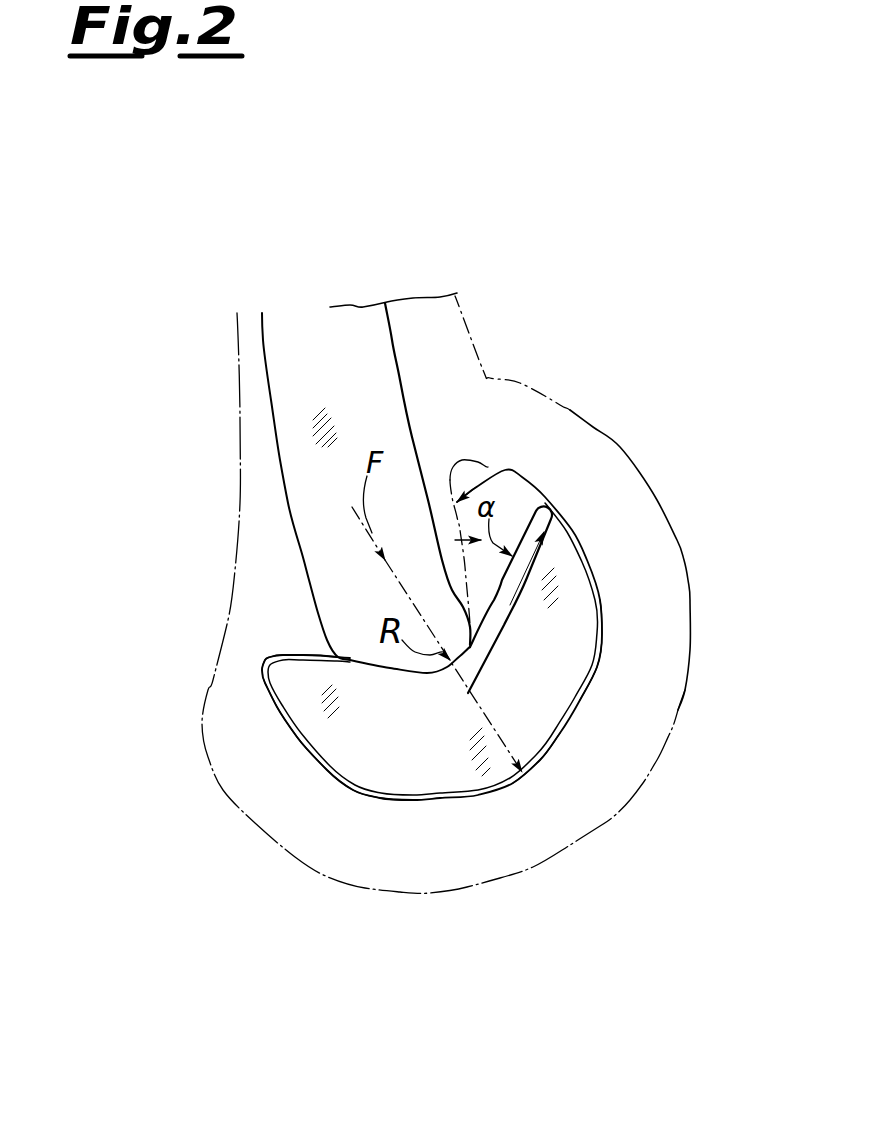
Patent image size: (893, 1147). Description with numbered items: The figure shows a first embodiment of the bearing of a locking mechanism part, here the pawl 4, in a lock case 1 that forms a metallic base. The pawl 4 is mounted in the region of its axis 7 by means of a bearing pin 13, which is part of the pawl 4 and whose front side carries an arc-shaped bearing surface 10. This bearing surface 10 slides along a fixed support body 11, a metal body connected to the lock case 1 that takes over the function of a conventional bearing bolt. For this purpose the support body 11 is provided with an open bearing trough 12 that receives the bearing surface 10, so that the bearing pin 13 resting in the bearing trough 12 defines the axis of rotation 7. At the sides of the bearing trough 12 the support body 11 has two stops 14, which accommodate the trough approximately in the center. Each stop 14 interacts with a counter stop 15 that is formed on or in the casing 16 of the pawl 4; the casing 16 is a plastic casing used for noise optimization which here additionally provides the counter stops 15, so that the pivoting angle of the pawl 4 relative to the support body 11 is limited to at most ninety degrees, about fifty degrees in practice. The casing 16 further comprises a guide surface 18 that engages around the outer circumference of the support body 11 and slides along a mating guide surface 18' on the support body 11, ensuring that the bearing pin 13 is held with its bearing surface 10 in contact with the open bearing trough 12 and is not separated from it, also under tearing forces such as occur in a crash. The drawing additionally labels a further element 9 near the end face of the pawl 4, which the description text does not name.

The lock case 1 is at (563, 918).
The pawl 4 is at (358, 302).
The axis 7 is at (453, 667).
The end face of collar 9 is at (510, 605).
The bearing surface 10 is at (466, 638).
The support body 11 is at (397, 752).
The bearing trough 12 is at (466, 638).
The bearing pin 13 is at (342, 552).
The stop 14 is at (521, 524).
The counter stop 15 is at (488, 467).
The casing 16 is at (660, 503).
The guide surface 18 is at (640, 715).
The mating guide surface 18' is at (595, 821).